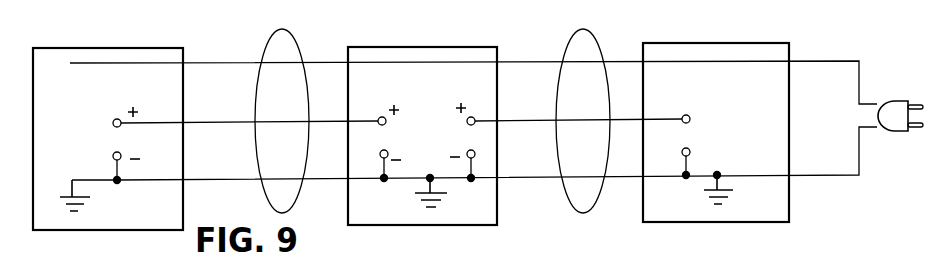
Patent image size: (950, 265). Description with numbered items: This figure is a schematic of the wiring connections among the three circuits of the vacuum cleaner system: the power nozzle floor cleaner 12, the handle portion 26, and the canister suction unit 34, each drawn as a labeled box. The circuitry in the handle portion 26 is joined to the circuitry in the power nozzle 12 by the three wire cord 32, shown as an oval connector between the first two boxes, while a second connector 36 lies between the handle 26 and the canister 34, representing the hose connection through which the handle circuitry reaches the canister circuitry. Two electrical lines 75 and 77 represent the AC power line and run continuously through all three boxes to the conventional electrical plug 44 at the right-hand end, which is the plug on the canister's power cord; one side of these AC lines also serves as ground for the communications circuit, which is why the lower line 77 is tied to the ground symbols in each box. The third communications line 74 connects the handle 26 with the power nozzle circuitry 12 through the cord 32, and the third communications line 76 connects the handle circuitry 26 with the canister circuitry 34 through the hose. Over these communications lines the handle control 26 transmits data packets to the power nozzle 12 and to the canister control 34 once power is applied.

The power nozzle floor cleaner 12 is at (178, 42).
The handle portion 26 is at (476, 43).
The canister suction unit 34 is at (784, 37).
The three wire cord 32 is at (284, 27).
The connector between handle and canister 36 is at (586, 29).
The third communications line 74 is at (218, 122).
The third communications line 76 is at (515, 120).
The electrical line 75 is at (479, 62).
The electrical line 77 is at (845, 176).
The electrical plug 44 is at (895, 120).